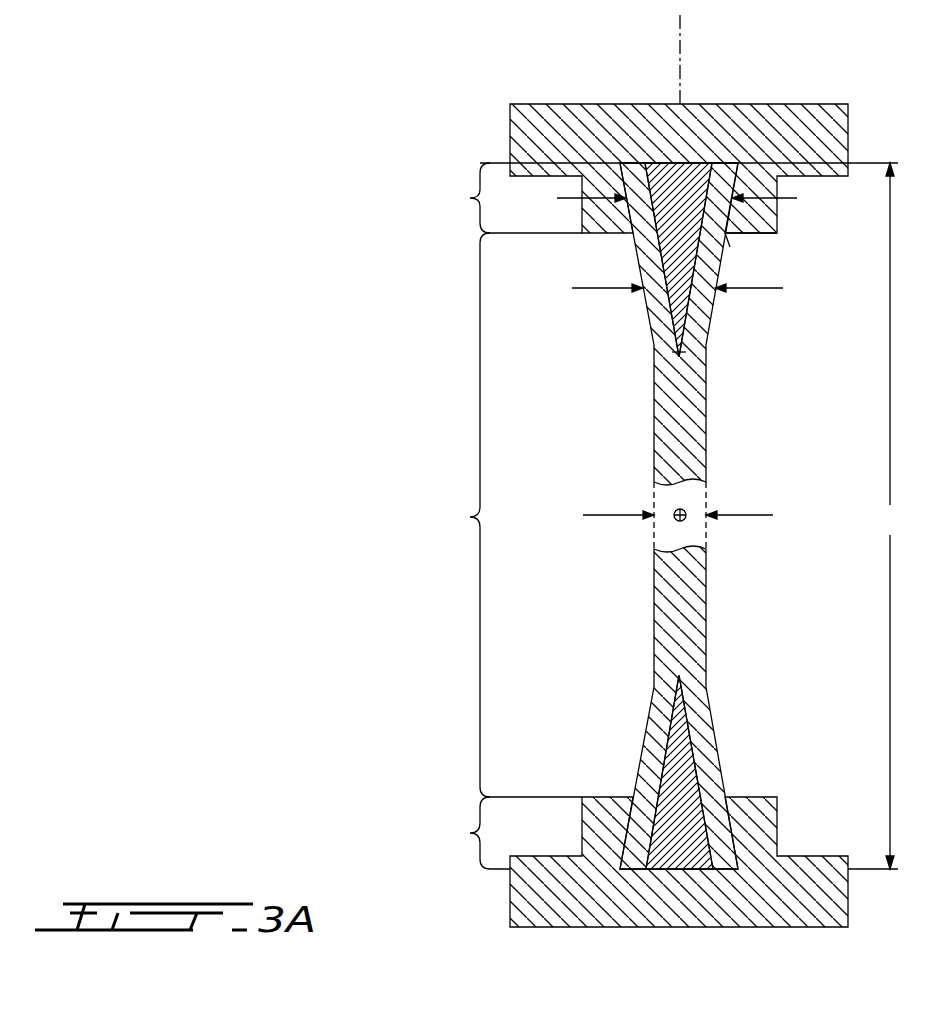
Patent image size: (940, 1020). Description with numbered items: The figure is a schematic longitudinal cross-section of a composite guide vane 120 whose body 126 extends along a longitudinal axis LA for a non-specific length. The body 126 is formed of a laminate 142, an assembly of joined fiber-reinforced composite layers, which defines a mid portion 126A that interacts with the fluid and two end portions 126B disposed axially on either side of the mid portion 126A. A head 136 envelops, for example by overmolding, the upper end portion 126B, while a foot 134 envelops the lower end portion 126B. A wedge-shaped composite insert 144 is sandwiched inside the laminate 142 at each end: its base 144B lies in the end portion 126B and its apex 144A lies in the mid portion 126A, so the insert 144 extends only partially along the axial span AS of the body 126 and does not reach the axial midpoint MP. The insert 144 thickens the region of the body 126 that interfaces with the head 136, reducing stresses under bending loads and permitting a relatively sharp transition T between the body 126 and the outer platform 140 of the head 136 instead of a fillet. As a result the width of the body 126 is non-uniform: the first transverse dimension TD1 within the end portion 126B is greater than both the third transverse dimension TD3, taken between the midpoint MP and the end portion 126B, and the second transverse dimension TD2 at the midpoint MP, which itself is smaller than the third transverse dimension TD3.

The vane 120 is at (325, 268).
The body 126 is at (612, 368).
The mid portion 126A is at (497, 515).
The end portion 126B is at (497, 516).
The foot 134 is at (540, 894).
The head 136 is at (530, 132).
The outer platform 140 is at (777, 237).
The laminate 142 is at (662, 313).
The insert 144 is at (660, 246).
The apex 144A is at (684, 352).
The base 144B is at (672, 160).
The longitudinal axis LA is at (683, 41).
The axial midpoint MP is at (683, 508).
The transition T is at (731, 245).
The first transverse dimension TD1 is at (699, 197).
The second transverse dimension TD2 is at (700, 524).
The third transverse dimension TD3 is at (707, 287).
The axial span AS is at (693, 516).